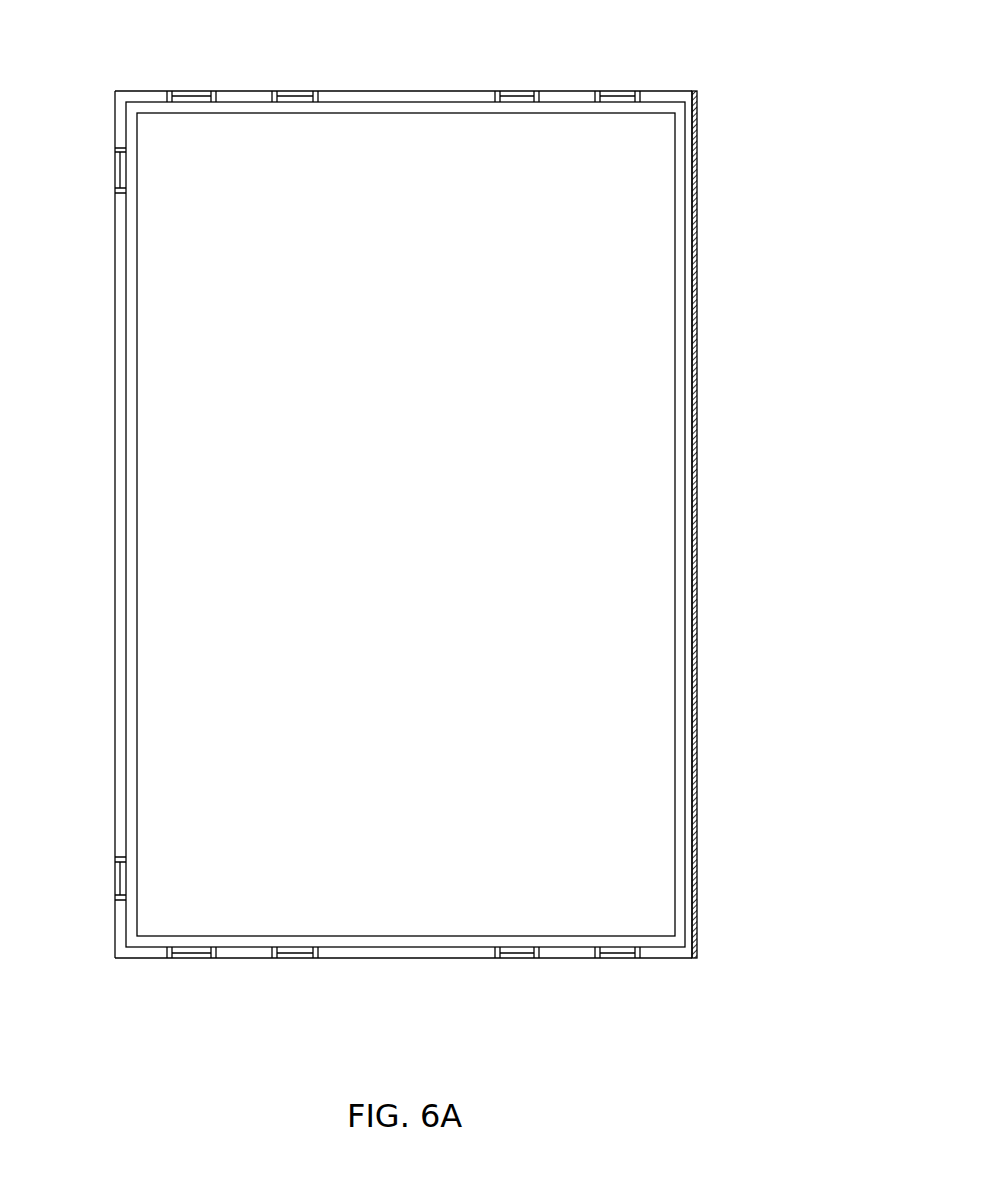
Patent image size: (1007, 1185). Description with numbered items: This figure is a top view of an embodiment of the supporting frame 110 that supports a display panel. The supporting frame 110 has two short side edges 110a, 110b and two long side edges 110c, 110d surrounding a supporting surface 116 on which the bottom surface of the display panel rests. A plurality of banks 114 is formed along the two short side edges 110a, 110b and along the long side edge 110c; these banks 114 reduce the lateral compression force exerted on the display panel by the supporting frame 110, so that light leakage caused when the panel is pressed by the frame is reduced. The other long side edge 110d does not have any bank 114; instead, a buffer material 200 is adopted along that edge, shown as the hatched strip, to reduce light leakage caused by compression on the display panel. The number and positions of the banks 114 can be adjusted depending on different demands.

The supporting frame 110 is at (91, 23).
The short side edge 110a is at (414, 958).
The short side edge 110b is at (405, 91).
The long side edge 110c is at (115, 519).
The long side edge 110d is at (697, 529).
The bank 114 is at (196, 91).
The supporting surface 116 is at (685, 482).
The buffer material 200 is at (697, 450).